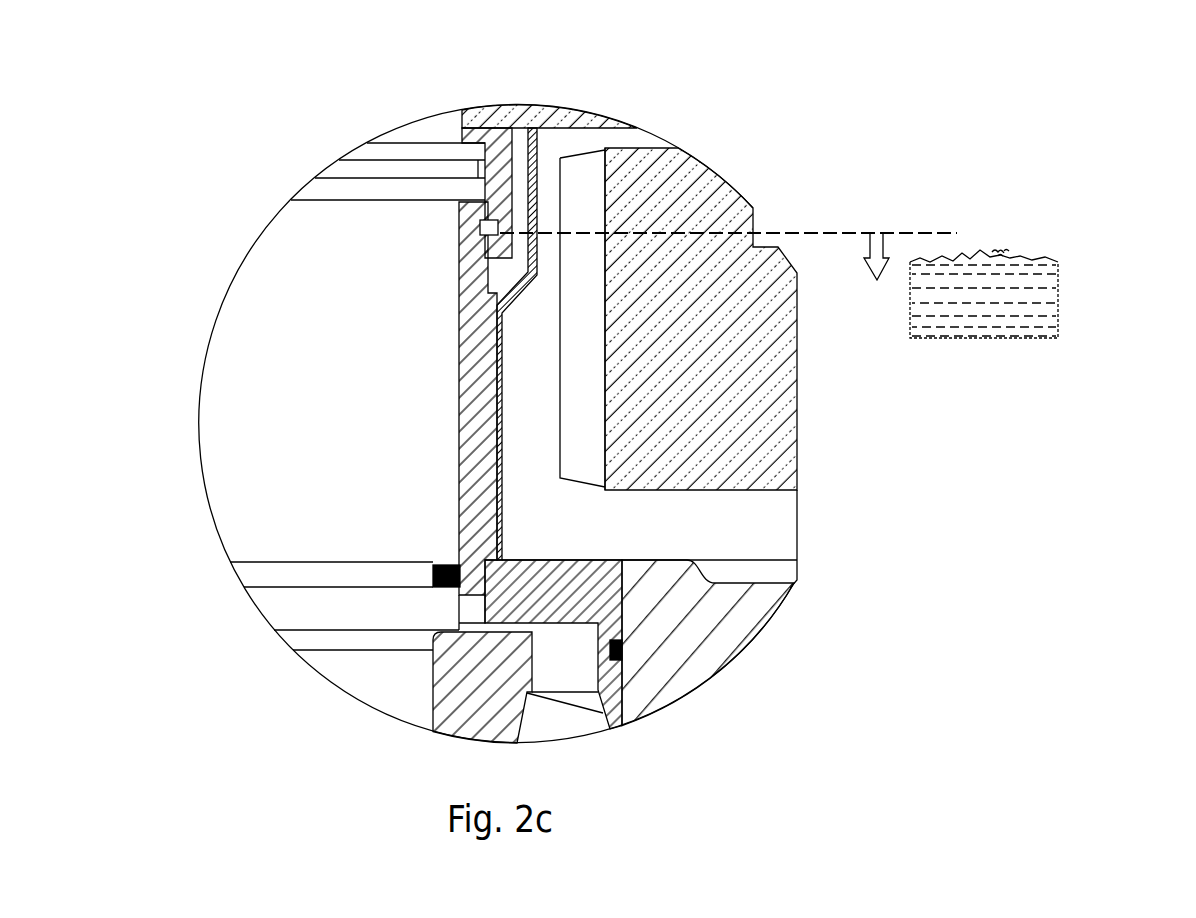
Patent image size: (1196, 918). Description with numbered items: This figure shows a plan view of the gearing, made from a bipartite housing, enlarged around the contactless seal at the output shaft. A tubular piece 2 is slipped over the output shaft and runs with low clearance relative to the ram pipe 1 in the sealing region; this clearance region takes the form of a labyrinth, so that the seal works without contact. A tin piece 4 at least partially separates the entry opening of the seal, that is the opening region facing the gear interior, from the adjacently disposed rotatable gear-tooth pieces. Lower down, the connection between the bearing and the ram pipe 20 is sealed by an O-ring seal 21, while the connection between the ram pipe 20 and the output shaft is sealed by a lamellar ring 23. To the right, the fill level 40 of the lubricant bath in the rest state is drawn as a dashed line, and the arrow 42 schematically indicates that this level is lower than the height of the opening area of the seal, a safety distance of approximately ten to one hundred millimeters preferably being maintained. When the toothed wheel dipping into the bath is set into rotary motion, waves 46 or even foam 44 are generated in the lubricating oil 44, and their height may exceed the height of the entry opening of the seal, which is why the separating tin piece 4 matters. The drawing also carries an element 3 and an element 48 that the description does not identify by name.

The ram pipe 1 is at (462, 412).
The tubular piece 2 is at (487, 137).
The housing wall 3 is at (470, 212).
The tin piece 4 is at (536, 145).
The ram pipe 20 is at (605, 602).
The O-ring seal 21 is at (486, 226).
The lamellar ring 23 is at (435, 587).
The fill level 40 is at (903, 233).
The arrow 42 is at (870, 233).
The foam 44 is at (1050, 280).
The waves 46 is at (975, 248).
The particles 48 is at (1008, 250).